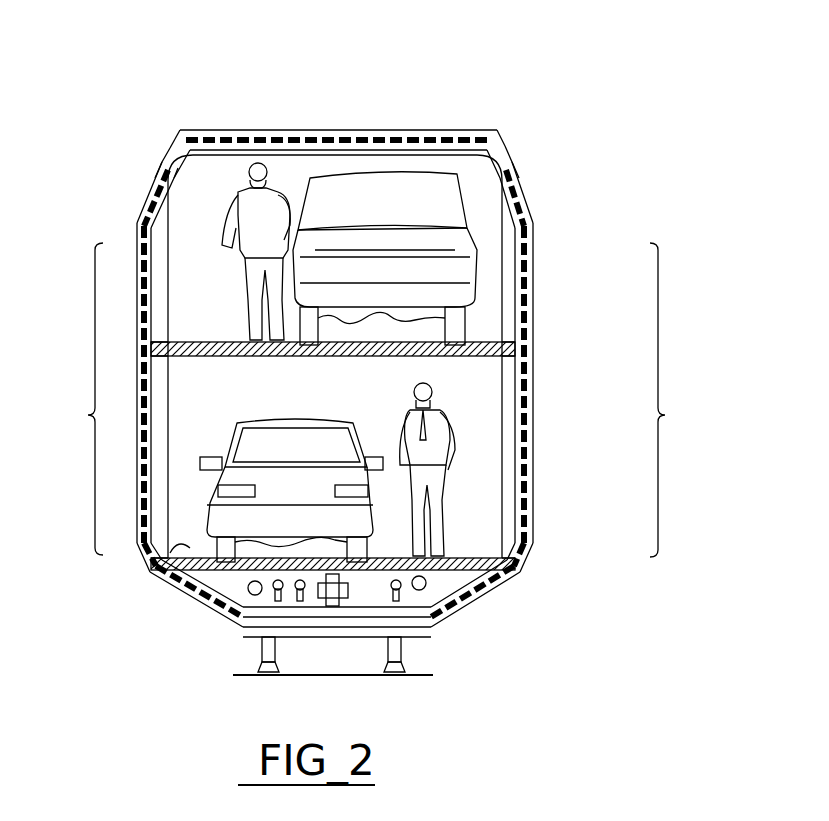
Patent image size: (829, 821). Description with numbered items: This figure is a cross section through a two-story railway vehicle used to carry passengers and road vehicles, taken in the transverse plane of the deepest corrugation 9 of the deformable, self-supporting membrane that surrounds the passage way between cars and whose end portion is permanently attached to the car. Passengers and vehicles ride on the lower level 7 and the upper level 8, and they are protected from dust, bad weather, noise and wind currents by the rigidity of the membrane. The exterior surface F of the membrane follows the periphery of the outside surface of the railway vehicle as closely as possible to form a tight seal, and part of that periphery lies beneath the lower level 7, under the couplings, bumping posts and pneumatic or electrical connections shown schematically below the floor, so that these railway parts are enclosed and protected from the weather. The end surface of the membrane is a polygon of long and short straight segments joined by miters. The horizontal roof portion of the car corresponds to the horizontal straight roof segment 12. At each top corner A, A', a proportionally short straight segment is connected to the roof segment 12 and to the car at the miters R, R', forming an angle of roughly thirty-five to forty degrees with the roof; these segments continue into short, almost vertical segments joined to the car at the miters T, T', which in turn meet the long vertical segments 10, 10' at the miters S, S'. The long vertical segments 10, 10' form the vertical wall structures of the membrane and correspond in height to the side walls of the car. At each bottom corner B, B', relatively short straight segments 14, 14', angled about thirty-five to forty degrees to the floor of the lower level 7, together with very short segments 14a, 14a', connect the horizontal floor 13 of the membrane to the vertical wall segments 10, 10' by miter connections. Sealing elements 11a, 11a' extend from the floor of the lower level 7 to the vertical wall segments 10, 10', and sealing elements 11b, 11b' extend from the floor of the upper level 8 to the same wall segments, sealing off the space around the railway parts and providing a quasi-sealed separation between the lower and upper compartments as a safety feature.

The lower level 7 is at (469, 554).
The upper level 8 is at (406, 338).
The deepest corrugation 9 is at (128, 383).
The long vertical segment 10 is at (147, 371).
The long vertical segment 10' is at (573, 365).
The sealing element 11a is at (156, 607).
The sealing element 11a' is at (550, 524).
The sealing element 11b is at (190, 314).
The sealing element 11b' is at (548, 317).
The horizontal straight roof segment 12 is at (392, 126).
The horizontal floor 13 is at (337, 636).
The short straight segment 14 is at (201, 636).
The short straight segment 14' is at (517, 631).
The very short segment 14a is at (107, 589).
The very short segment 14a' is at (570, 590).
The miter R is at (162, 96).
The miter R' is at (514, 95).
The top corner A is at (148, 137).
The top corner A' is at (526, 129).
The miter T is at (115, 148).
The miter T' is at (556, 145).
The miter S is at (157, 424).
The miter S' is at (511, 423).
The exterior surface F is at (134, 297).
The bottom corner B is at (126, 569).
The bottom corner B' is at (551, 570).